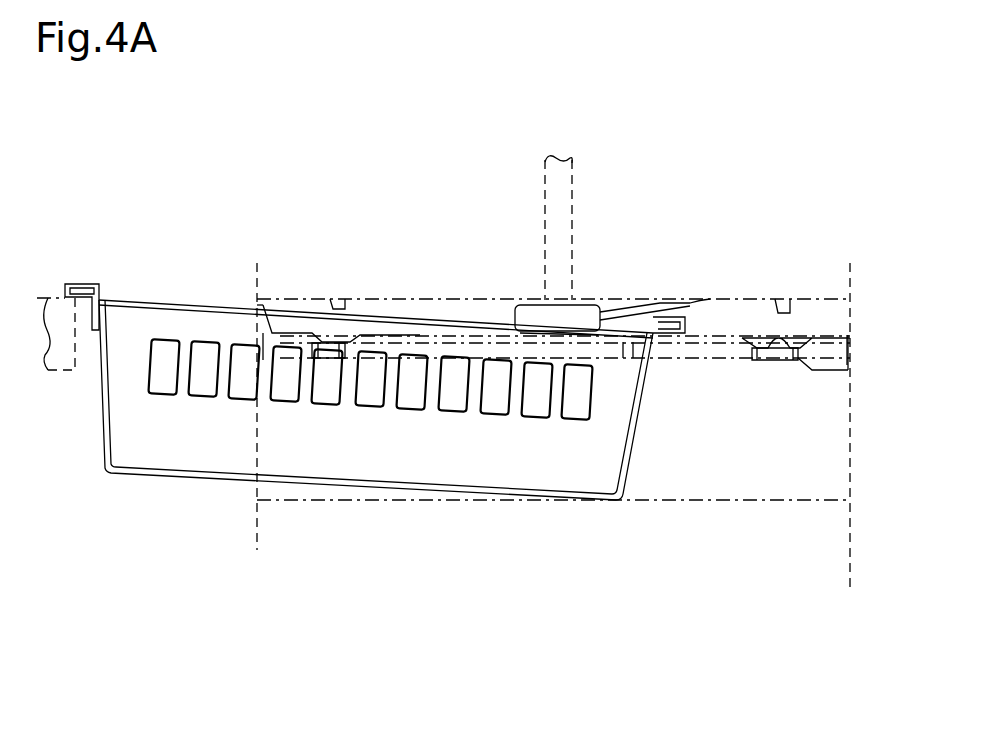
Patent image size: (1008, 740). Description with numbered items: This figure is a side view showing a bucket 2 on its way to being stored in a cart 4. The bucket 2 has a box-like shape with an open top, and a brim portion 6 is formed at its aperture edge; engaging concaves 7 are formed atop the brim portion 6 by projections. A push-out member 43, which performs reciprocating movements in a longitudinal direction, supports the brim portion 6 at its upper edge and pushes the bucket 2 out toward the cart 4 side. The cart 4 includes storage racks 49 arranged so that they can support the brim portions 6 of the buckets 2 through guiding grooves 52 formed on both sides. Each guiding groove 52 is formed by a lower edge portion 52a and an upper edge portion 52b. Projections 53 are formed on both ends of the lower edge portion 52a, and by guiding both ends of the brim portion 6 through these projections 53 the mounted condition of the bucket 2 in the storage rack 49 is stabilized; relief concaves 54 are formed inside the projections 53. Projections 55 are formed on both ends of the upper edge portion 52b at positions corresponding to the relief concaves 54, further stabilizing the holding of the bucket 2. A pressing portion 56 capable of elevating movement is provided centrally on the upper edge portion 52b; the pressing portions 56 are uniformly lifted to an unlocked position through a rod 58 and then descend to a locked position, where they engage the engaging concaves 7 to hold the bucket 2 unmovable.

The bucket 2 is at (185, 478).
The cart 4 is at (856, 493).
The brim portion 6 is at (82, 283).
The engaging concave 7 is at (398, 316).
The push-out member 43 is at (62, 372).
The storage rack 49 is at (287, 298).
The guiding groove 52 is at (712, 300).
The lower edge portion 52a is at (706, 346).
The upper edge portion 52b is at (668, 300).
The projection 53 is at (258, 305).
The relief concave 54 is at (352, 335).
The projection 55 is at (335, 299).
The pressing portion 56 is at (585, 303).
The rod 58 is at (548, 207).